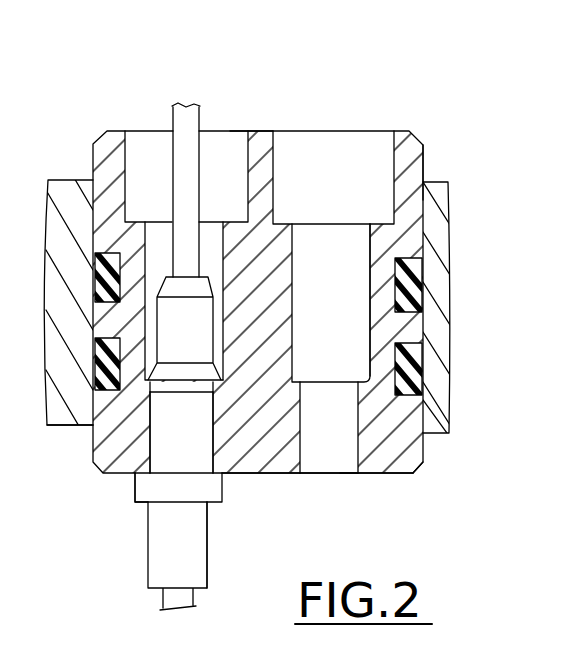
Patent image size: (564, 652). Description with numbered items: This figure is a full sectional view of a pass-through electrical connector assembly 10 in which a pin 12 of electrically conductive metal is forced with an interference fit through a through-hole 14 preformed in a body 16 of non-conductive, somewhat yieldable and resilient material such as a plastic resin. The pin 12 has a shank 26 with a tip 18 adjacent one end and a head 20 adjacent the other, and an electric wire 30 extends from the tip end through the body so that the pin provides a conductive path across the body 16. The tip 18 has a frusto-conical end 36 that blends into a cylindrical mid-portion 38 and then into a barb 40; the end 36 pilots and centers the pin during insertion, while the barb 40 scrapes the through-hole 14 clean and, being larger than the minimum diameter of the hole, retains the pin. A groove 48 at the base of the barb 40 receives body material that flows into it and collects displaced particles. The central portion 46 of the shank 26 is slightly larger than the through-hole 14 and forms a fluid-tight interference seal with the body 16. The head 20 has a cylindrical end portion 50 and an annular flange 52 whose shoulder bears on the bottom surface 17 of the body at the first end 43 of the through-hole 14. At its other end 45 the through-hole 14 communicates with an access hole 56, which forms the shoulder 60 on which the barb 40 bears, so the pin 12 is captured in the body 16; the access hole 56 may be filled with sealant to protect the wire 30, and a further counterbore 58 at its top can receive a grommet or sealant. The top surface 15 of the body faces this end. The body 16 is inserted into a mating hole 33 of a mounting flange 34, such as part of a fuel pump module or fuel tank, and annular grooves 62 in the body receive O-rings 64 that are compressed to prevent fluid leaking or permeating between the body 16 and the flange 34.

The pass-through electrical connector assembly 10 is at (0, 12).
The pin 12 is at (118, 503).
The through-hole 14 is at (356, 478).
The top surface of housing 15 is at (253, 130).
The body 16 is at (0, 62).
The bottom surface 17 is at (243, 477).
The tip 18 is at (226, 297).
The head 20 is at (216, 535).
The shank 26 is at (228, 438).
The electric wire 30 is at (178, 121).
The mating hole 33 is at (424, 195).
The mounting flange 34 is at (82, 186).
The frusto-conical end 36 is at (170, 287).
The cylindrical mid-portion 38 is at (192, 330).
The barb 40 is at (192, 374).
The first end 43 is at (330, 477).
The end of the through-hole 45 is at (317, 381).
The central portion 46 is at (167, 445).
The groove 48 is at (88, 414).
The cylindrical end portion 50 is at (162, 528).
The annular flange 52 is at (138, 490).
The access hole 56 is at (384, 320).
The counterbore 58 is at (309, 150).
The shoulder 60 is at (418, 455).
The annular grooves 62 is at (97, 305).
The O-rings 64 is at (97, 296).